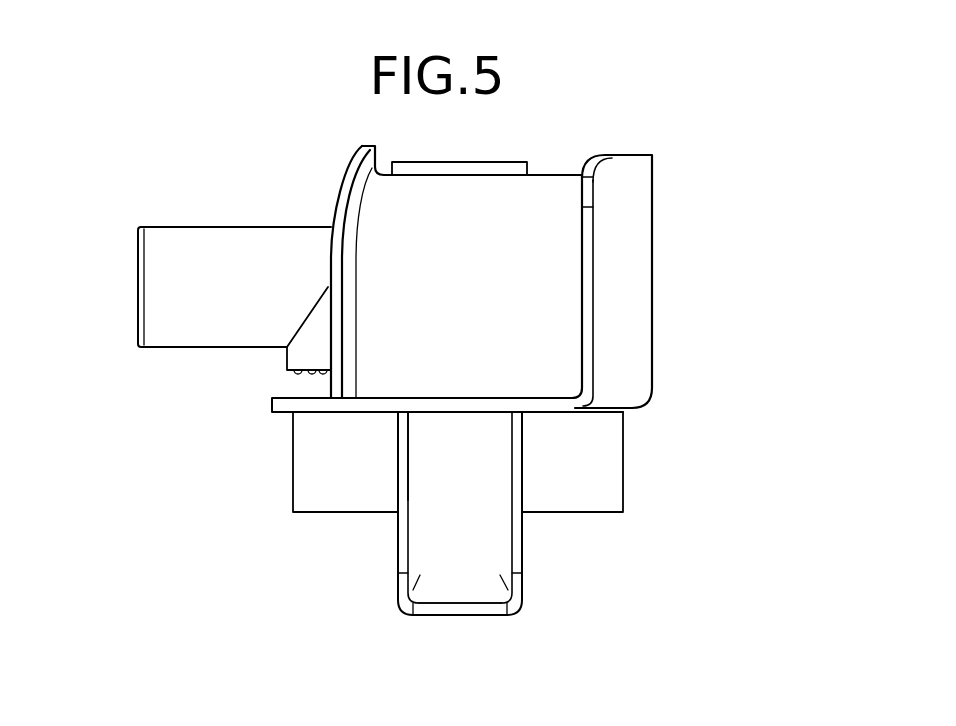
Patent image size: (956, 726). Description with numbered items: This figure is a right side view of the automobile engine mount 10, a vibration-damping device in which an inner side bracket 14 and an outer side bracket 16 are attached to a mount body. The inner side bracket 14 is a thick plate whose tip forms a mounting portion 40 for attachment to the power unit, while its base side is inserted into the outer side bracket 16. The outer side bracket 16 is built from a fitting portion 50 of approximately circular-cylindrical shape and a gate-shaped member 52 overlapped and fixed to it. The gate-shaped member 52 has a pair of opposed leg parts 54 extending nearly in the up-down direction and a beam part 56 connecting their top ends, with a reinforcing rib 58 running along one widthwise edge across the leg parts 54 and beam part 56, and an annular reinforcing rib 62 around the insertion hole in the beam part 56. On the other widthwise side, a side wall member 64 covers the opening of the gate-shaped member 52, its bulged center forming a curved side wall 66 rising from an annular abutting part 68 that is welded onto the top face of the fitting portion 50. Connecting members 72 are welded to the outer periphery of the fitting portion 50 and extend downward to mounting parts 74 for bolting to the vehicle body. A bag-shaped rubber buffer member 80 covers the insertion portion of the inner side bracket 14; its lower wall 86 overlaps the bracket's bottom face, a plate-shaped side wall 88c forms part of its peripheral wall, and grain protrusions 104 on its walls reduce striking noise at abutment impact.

The engine mount 10 is at (720, 143).
The inner side bracket 14 is at (150, 222).
The outer side bracket 16 is at (684, 293).
The mounting portion 40 is at (165, 296).
The fitting portion 50 is at (573, 498).
The gate-shaped member 52 is at (350, 146).
The leg part 54 is at (452, 378).
The beam part 56 is at (551, 187).
The reinforcing rib 58 is at (338, 198).
The reinforcing rib 62 is at (447, 172).
The side wall member 64 is at (660, 238).
The side wall 66 is at (633, 288).
The abutting part 68 is at (368, 407).
The connecting member 72 is at (530, 586).
The mounting part 74 is at (463, 608).
The rubber buffer member 80 is at (276, 362).
The lower wall 86 is at (310, 365).
The side wall 88c is at (320, 317).
The grain protrusion 104 is at (328, 373).